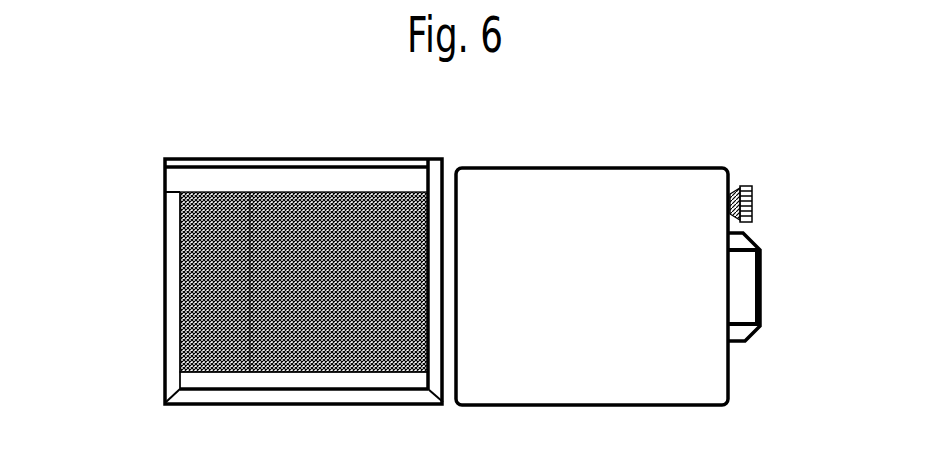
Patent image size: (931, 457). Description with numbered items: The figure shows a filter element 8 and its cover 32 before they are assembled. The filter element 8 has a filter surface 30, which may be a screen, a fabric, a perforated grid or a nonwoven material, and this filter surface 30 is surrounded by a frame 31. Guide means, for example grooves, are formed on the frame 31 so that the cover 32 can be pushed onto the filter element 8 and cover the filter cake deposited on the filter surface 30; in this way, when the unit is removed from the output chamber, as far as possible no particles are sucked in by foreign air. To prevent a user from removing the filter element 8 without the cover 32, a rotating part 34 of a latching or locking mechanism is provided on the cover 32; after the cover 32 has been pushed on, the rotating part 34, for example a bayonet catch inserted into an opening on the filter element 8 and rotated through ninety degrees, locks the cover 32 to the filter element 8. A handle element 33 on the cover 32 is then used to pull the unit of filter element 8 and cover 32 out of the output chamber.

The filter element 8 is at (274, 124).
The filter surface 30 is at (180, 293).
The frame 31 is at (173, 180).
The cover 32 is at (622, 205).
The handle element 33 is at (765, 272).
The rotating part 34 is at (752, 203).